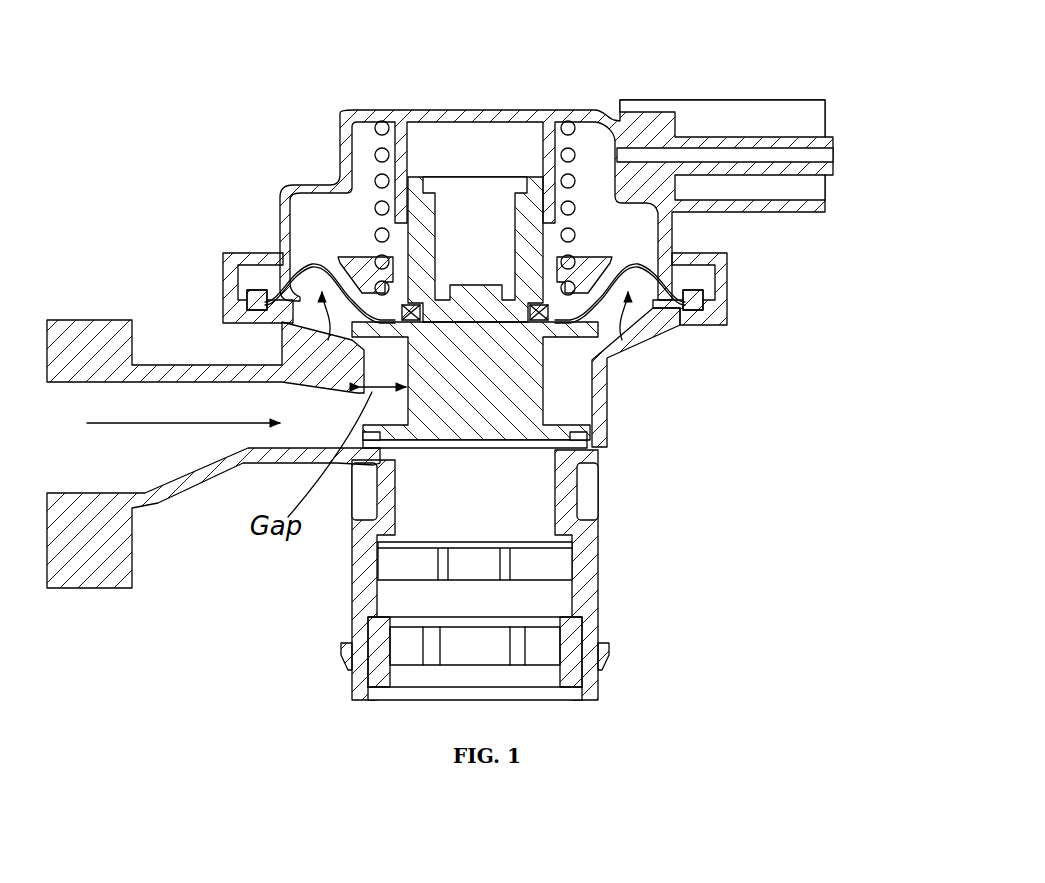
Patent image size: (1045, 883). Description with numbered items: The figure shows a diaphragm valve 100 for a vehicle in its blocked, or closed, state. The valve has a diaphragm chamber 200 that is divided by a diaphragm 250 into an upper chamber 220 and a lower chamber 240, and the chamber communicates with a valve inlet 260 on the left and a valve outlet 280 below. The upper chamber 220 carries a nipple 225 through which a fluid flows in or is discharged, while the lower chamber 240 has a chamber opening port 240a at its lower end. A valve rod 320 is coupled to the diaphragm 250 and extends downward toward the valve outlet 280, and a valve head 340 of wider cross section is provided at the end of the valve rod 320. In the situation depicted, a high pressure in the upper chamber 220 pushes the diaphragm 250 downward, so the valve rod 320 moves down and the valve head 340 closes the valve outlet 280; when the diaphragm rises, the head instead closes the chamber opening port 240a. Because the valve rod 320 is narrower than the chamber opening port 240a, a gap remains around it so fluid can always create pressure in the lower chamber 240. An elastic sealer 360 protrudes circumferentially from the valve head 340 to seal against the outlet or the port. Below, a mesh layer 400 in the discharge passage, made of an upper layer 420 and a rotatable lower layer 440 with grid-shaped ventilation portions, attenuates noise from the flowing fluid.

The diaphragm valve 100 is at (205, 237).
The diaphragm chamber 200 is at (866, 268).
The upper chamber 220 is at (667, 233).
The nipple 225 is at (652, 157).
The lower chamber 240 is at (652, 333).
The chamber opening port 240a is at (360, 382).
The diaphragm 250 is at (322, 258).
The valve inlet 260 is at (363, 412).
The valve outlet 280 is at (424, 462).
The valve rod 320 is at (522, 384).
The valve head 340 is at (585, 440).
The sealer 360 is at (600, 458).
The mesh layer 400 is at (755, 587).
The upper layer 420 is at (560, 566).
The lower layer 440 is at (545, 653).